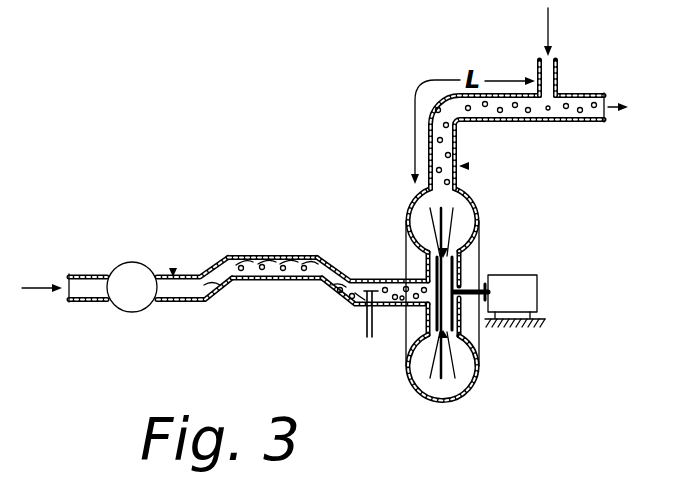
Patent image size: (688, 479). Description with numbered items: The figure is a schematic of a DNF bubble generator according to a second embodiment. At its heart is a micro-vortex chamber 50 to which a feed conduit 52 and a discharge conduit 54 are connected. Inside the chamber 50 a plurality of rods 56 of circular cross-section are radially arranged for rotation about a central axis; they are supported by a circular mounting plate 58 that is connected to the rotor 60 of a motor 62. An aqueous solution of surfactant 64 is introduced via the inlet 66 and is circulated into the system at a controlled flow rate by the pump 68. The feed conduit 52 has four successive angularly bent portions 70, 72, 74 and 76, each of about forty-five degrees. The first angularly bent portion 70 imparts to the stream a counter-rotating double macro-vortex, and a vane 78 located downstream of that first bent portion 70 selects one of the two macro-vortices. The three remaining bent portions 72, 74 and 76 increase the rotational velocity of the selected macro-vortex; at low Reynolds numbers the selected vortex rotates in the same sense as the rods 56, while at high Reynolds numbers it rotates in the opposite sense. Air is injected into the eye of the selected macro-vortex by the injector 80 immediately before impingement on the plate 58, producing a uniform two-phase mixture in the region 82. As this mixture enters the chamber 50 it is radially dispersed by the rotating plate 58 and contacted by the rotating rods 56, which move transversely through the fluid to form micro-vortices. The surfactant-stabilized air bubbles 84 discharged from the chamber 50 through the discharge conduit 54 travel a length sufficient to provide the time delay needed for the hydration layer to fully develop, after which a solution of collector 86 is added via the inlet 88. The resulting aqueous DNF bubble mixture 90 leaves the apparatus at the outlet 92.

The micro-vortex chamber 50 is at (450, 385).
The feed conduit 52 is at (173, 270).
The discharge conduit 54 is at (467, 166).
The rods 56 is at (448, 232).
The circular mounting plate 58 is at (443, 270).
The rotor 60 is at (480, 302).
The motor 62 is at (522, 294).
The aqueous solution of surfactant 64 is at (42, 288).
The inlet 66 is at (72, 293).
The pump 68 is at (127, 313).
The first angularly bent portion 70 is at (208, 301).
The angularly bent portion 72 is at (224, 256).
The angularly bent portion 74 is at (328, 256).
The angularly bent portion 76 is at (330, 305).
The vane 78 is at (212, 282).
The injector 80 is at (368, 330).
The region 82 is at (430, 268).
The surfactant-stabilized air bubbles 84 is at (455, 131).
The solution of collector 86 is at (548, 30).
The inlet 88 is at (552, 76).
The aqueous DNF bubble mixture 90 is at (610, 100).
The outlet 92 is at (605, 117).